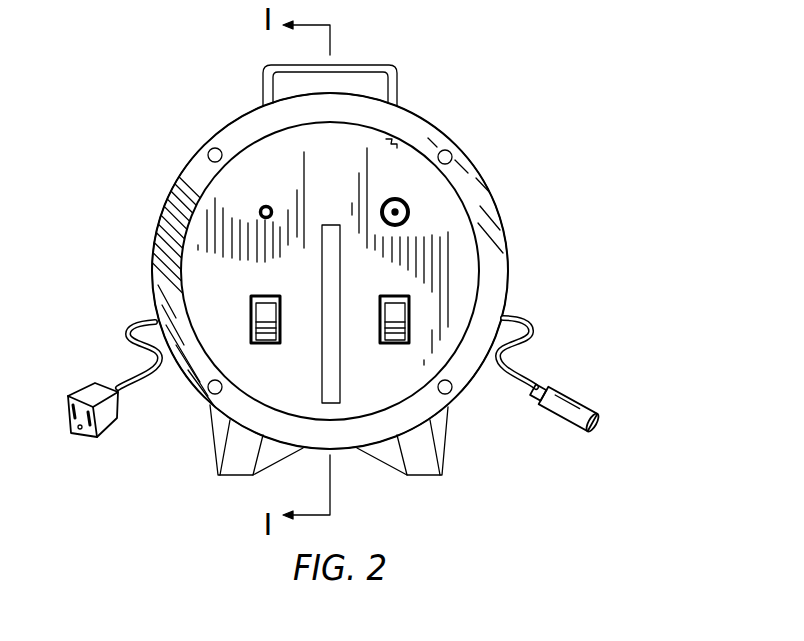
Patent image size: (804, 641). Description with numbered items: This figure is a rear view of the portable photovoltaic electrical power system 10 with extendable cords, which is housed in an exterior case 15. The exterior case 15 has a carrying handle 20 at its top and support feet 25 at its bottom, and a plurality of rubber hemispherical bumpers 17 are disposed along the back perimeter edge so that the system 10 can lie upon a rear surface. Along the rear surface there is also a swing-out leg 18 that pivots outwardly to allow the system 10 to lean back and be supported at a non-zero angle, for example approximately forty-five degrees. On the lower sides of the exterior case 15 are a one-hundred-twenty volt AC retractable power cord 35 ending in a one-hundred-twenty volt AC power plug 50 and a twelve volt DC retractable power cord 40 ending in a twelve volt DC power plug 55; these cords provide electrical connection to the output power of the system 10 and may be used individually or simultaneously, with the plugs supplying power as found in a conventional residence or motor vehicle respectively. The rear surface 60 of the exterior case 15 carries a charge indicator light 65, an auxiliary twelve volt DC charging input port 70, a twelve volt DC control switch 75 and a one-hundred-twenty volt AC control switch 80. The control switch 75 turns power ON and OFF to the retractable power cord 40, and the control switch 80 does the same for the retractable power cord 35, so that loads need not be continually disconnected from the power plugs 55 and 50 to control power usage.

The system 10 is at (146, 512).
The exterior case 15 is at (490, 200).
The rubber hemispherical bumpers 17 is at (215, 147).
The swing-out leg 18 is at (325, 270).
The carrying handle 20 is at (345, 63).
The support feet 25 is at (240, 463).
The 120-VAC retractable power cord 35 is at (130, 326).
The 12-VDC retractable power cord 40 is at (533, 332).
The 120-VAC power plug 50 is at (75, 390).
The 12-VDC power plug 55 is at (582, 398).
The rear surface 60 is at (393, 143).
The charge indicator light 65 is at (260, 206).
The auxiliary 12-VDC charging input port 70 is at (408, 200).
The 12-VDC control switch 75 is at (251, 307).
The 120-VAC control switch 80 is at (410, 310).